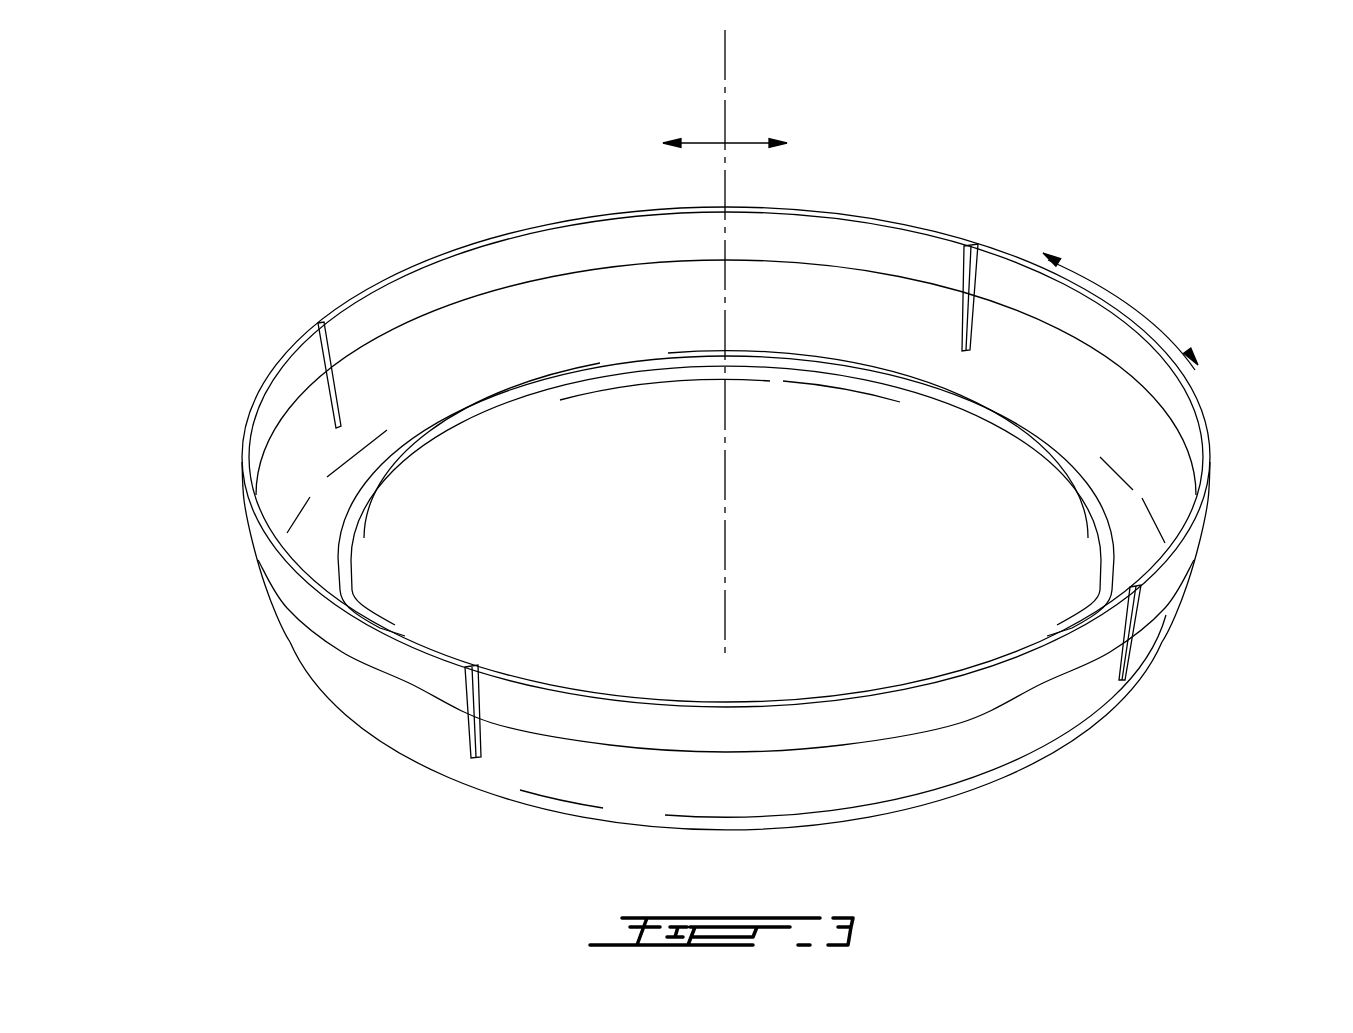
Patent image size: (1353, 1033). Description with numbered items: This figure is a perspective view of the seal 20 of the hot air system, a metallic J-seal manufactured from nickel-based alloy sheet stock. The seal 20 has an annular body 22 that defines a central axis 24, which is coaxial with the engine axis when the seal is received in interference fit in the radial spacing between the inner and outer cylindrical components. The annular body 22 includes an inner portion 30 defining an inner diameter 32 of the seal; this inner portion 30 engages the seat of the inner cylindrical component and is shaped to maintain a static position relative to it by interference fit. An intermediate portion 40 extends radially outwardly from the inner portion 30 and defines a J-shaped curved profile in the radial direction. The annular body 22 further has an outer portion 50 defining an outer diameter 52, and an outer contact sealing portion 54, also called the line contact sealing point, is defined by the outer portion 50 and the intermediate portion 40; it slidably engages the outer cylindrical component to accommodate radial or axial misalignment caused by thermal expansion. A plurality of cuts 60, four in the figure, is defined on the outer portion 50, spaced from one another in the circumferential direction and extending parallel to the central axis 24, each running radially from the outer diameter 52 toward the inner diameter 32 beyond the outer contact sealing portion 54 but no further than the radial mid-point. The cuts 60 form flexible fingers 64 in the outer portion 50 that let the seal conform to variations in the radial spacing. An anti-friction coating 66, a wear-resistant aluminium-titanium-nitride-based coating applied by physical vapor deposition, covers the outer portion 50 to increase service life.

The seal 20 is at (743, 464).
The annular body 22 is at (517, 232).
The central axis 24 is at (727, 52).
The inner portion 30 is at (830, 382).
The inner diameter 32 is at (900, 378).
The intermediate portion 40 is at (1148, 450).
The outer portion 50 is at (1185, 560).
The outer diameter 52 is at (1200, 508).
The outer contact sealing portion 54 is at (1168, 608).
The cuts 60 is at (318, 360).
The flexible fingers 64 is at (610, 248).
The anti-friction coating 66 is at (1040, 665).